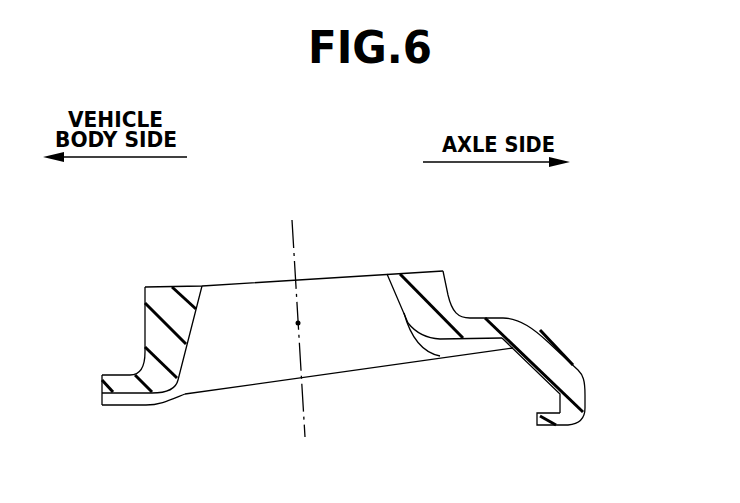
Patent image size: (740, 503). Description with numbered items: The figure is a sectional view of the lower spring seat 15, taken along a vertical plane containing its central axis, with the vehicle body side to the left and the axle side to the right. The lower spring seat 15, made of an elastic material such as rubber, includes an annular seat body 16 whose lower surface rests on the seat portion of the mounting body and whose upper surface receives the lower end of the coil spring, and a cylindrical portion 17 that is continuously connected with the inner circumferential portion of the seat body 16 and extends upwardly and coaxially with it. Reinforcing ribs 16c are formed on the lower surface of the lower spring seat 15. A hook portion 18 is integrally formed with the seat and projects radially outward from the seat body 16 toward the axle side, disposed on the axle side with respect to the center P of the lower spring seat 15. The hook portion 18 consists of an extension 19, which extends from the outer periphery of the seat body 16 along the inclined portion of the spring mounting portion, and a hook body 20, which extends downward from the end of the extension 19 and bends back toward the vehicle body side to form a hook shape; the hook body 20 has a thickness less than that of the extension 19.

The lower spring seat 15 is at (337, 251).
The annular seat body 16 is at (117, 380).
The reinforcing ribs 16c is at (130, 401).
The cylindrical portion 17 is at (164, 293).
The hook portion 18 is at (598, 380).
The extension 19 is at (550, 362).
The hook body 20 is at (598, 428).
The center of lower spring seat P is at (298, 323).